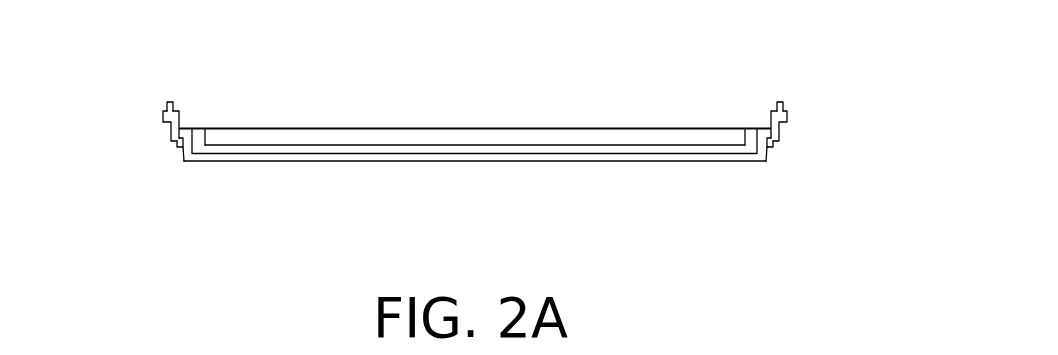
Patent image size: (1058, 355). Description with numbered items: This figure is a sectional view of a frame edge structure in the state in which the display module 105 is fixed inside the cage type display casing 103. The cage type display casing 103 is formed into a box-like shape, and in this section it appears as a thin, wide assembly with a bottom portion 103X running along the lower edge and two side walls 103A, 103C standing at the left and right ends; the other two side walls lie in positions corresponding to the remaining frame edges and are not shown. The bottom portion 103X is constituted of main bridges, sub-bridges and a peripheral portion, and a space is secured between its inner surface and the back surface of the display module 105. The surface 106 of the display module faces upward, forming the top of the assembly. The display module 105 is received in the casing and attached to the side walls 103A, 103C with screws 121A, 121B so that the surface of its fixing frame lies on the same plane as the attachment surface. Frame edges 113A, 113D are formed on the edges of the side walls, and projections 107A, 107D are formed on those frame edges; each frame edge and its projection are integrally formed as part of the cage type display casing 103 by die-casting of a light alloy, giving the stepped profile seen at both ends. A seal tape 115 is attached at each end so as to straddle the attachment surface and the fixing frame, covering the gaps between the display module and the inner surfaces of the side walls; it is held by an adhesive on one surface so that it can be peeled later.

The cage type display casing 103 is at (263, 186).
The side wall 103A is at (183, 161).
The side wall 103C is at (767, 150).
The bottom portion 103X is at (442, 162).
The display module 105 is at (515, 140).
The surface of the display module 106 is at (368, 128).
The projection 107A is at (171, 101).
The projection 107D is at (780, 102).
The frame edge 113A is at (157, 114).
The frame edge 113D is at (790, 121).
The seal tape 115 is at (195, 128).
The screw 121A is at (177, 145).
The screw 121B is at (773, 143).